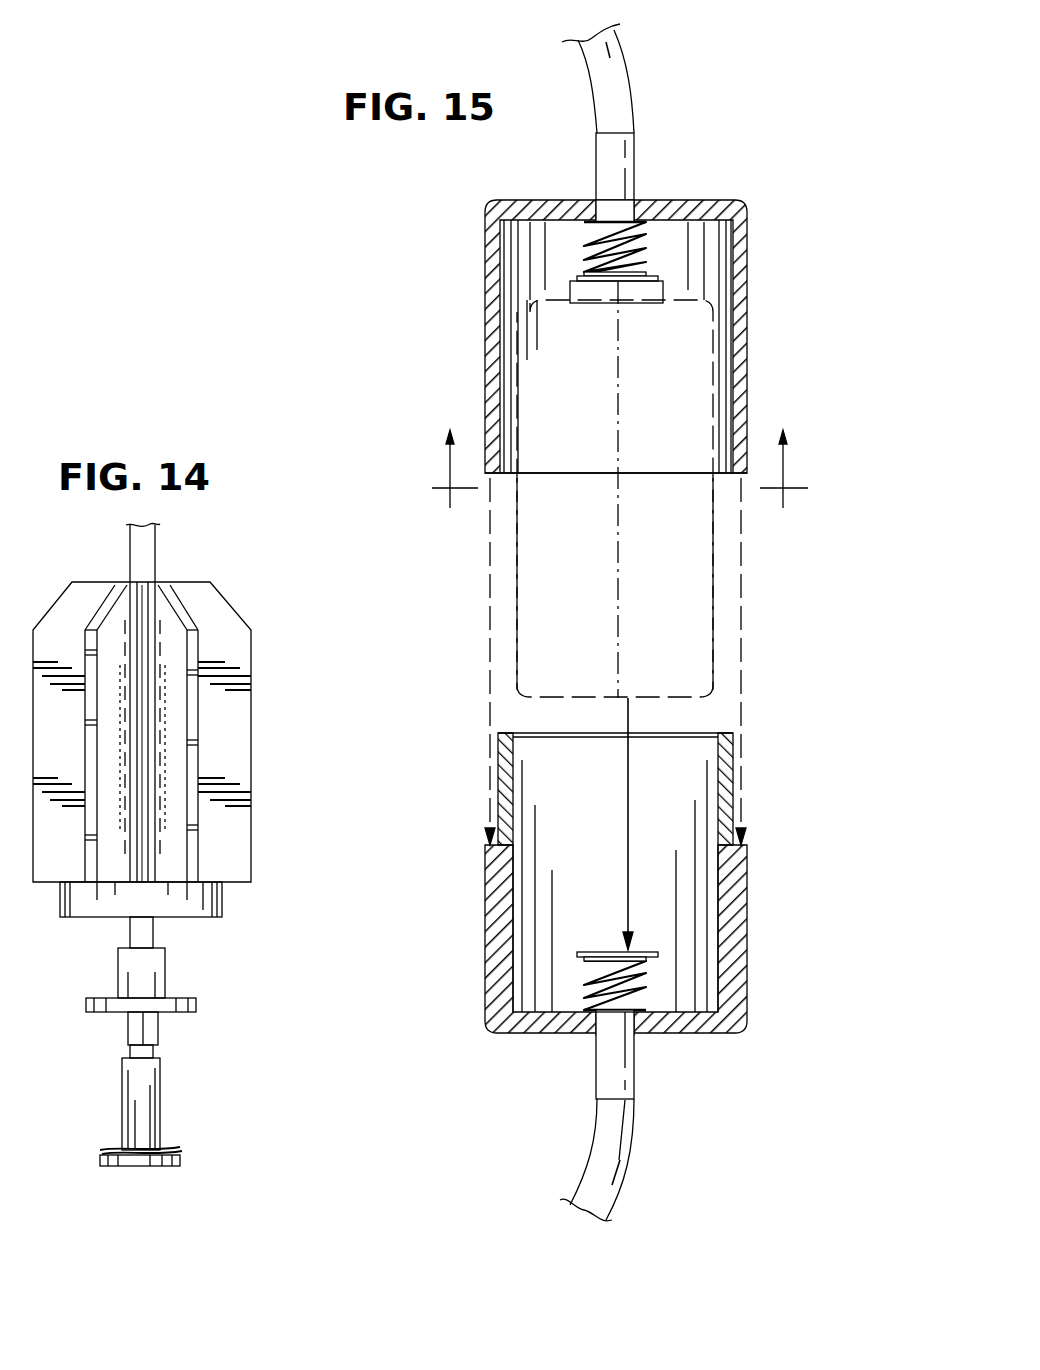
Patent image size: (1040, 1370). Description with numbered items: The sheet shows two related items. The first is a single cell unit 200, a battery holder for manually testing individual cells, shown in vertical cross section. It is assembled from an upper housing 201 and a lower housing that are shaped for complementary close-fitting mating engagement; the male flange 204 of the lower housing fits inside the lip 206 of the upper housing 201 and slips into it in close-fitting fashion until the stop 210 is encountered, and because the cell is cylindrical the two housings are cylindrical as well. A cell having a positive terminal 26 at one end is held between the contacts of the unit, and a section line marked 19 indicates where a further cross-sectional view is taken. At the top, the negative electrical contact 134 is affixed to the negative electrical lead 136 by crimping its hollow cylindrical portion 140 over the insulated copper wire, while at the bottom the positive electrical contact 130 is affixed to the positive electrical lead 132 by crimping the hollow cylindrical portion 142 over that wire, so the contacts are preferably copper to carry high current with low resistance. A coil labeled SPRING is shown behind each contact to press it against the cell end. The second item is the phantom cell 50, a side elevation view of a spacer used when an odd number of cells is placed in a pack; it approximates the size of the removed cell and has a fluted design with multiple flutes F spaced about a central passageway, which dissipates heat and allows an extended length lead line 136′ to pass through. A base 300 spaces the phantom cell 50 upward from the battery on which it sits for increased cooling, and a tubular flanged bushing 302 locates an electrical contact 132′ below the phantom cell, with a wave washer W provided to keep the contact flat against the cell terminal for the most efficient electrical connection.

In FIG. 15, the negative electrical contact 134 is at (613, 58).
In FIG. 15, the hollow cylindrical portion 140 is at (606, 164).
In FIG. 15, the single cell unit 200 is at (694, 184).
In FIG. 15, the upper housing 201 is at (745, 208).
In FIG. 15, the positive electrical contact 130 is at (580, 275).
In FIG. 15, the positive terminal 26 is at (545, 300).
In FIG. 15, the section line 19- 19 is at (620, 456).
In FIG. 15, the lip 206 is at (735, 474).
In FIG. 15, the male flange 204 is at (735, 760).
In FIG. 15, the stop 210 is at (747, 846).
In FIG. 15, the positive electrical lead 132 is at (597, 952).
In FIG. 15, the hollow cylindrical portion 142 is at (628, 1070).
In FIG. 14, the hollow cylindrical portion 142 is at (160, 1090).
In FIG. 15, the negative electrical lead 136 is at (605, 1145).
In FIG. 15, the spring SPRING is at (640, 240).
In FIG. 14, the phantom cell 50 is at (275, 728).
In FIG. 14, the flutes F is at (200, 638).
In FIG. 14, the base 300 is at (225, 903).
In FIG. 14, the extended length lead line 136′ is at (157, 935).
In FIG. 14, the tubular flanged bushing 302 is at (197, 1005).
In FIG. 14, the wave washer W is at (168, 1150).
In FIG. 14, the electrical contact 132′ is at (181, 1160).